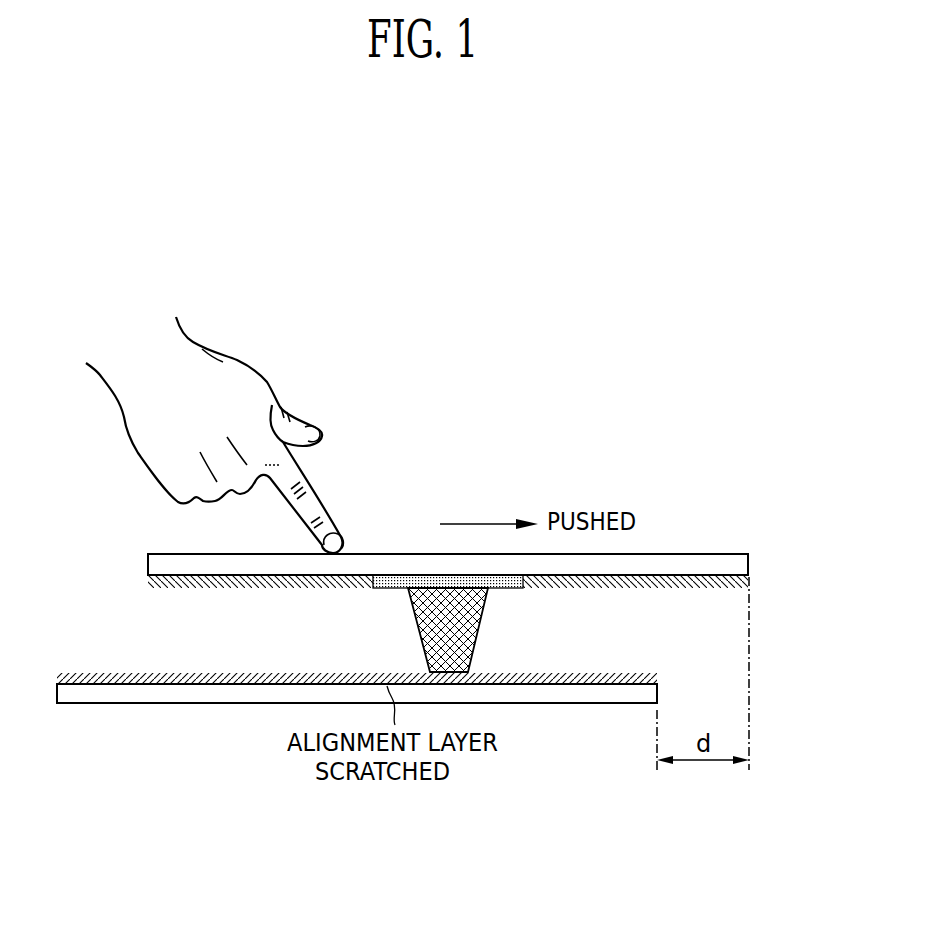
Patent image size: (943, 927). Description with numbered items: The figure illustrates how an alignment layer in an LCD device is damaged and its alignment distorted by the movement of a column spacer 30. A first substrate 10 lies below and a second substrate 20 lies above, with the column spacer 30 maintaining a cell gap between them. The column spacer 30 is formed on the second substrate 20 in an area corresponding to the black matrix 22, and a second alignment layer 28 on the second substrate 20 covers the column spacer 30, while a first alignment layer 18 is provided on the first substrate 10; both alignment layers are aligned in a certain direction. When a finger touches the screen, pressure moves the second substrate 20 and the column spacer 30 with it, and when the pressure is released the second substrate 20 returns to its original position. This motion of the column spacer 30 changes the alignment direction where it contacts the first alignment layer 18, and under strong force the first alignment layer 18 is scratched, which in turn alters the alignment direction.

The first substrate 10 is at (228, 697).
The first alignment layer 18 is at (157, 672).
The second substrate 20 is at (750, 565).
The black matrix 22 is at (403, 575).
The second alignment layer 28 is at (260, 588).
The column spacer 30 is at (484, 618).